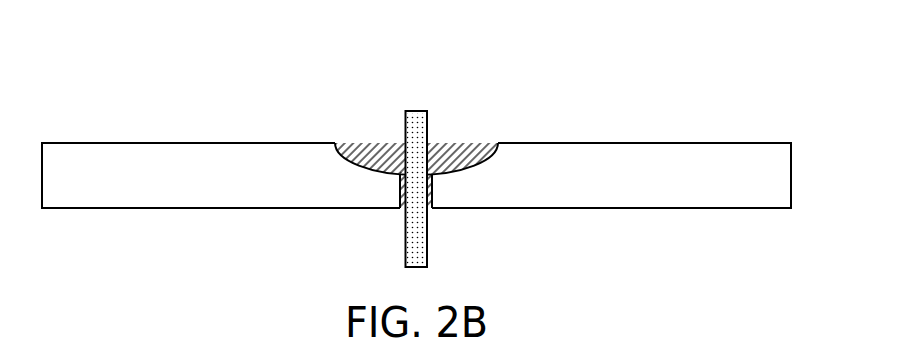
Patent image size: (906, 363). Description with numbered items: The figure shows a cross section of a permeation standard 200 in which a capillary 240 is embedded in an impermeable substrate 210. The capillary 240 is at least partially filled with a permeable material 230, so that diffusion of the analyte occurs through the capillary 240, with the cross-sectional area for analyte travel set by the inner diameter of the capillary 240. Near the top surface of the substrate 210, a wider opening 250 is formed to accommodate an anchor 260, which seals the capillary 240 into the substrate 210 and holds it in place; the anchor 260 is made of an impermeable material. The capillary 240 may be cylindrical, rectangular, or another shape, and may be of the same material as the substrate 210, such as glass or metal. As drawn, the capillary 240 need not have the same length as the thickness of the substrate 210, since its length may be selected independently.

The permeation standard 200 is at (112, 101).
The substrate 210 is at (563, 209).
The permeable material 230 is at (415, 110).
The capillary 240 is at (427, 238).
The wider opening 250 is at (481, 162).
The anchor 260 is at (377, 143).